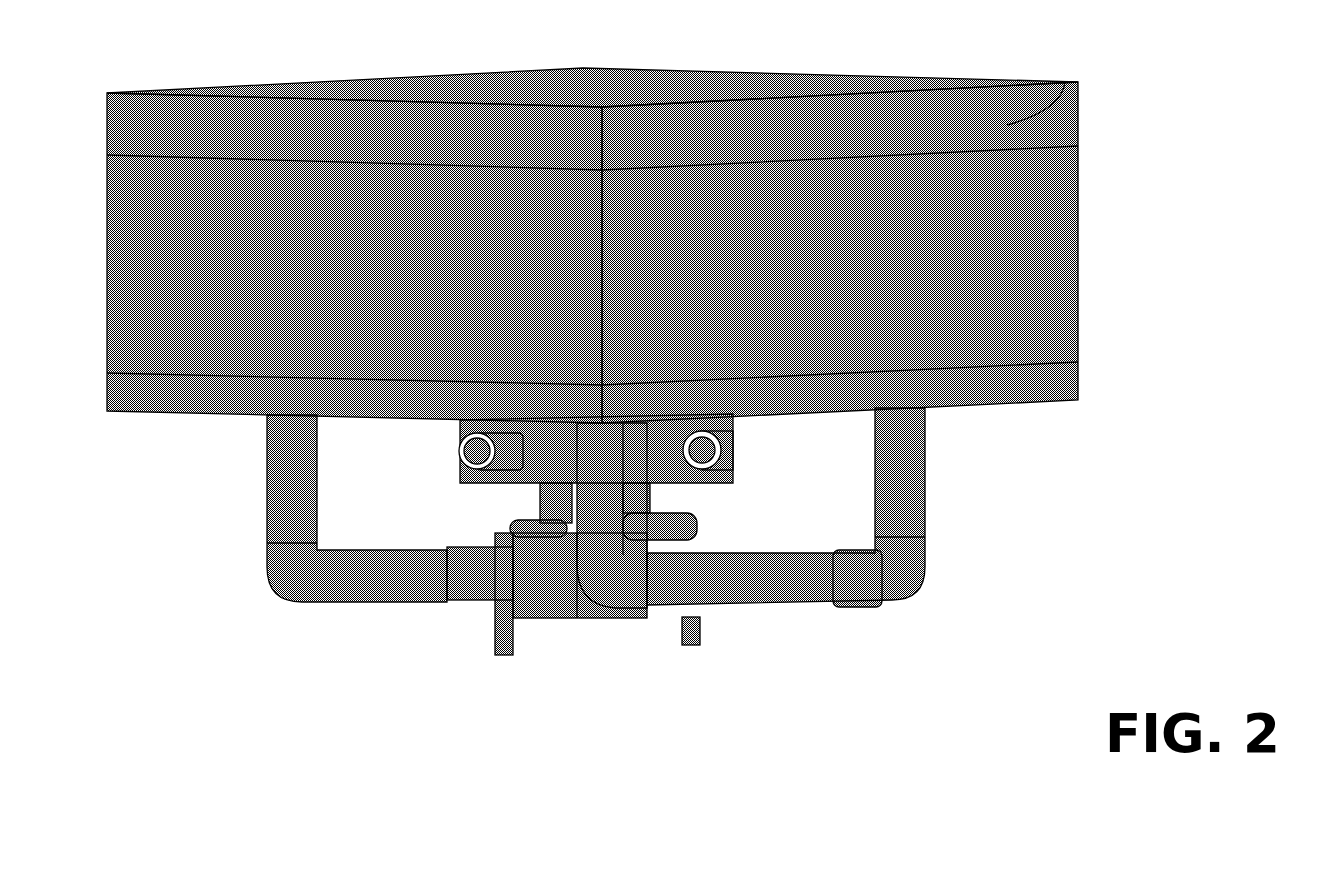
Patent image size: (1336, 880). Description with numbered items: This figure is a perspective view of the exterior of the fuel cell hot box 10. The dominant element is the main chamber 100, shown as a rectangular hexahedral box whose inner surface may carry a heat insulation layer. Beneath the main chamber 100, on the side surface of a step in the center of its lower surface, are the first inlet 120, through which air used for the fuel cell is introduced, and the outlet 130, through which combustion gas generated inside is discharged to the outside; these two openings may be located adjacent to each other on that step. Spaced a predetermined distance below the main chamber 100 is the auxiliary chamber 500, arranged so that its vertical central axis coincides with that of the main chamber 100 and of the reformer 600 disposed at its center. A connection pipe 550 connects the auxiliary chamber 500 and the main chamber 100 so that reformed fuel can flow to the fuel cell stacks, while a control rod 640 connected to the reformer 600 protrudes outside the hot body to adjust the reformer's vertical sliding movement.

The fuel cell hot box 10 is at (1127, 187).
The main chamber 100 is at (1065, 82).
The first inlet 120 is at (847, 543).
The outlet 130 is at (363, 537).
The auxiliary chamber 500 is at (606, 634).
The connection pipe 550 is at (786, 570).
The reformer 600 is at (437, 589).
The control rod 640 is at (427, 633).